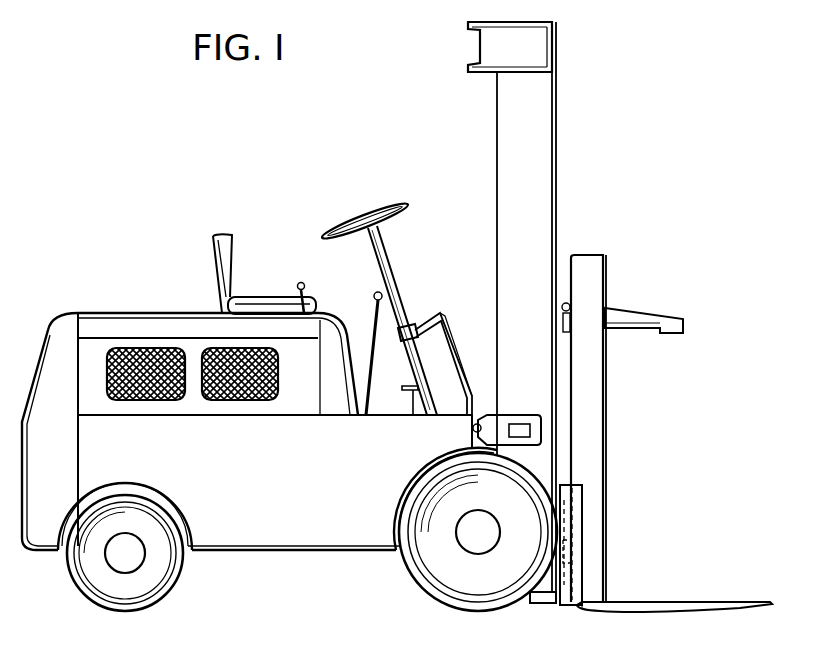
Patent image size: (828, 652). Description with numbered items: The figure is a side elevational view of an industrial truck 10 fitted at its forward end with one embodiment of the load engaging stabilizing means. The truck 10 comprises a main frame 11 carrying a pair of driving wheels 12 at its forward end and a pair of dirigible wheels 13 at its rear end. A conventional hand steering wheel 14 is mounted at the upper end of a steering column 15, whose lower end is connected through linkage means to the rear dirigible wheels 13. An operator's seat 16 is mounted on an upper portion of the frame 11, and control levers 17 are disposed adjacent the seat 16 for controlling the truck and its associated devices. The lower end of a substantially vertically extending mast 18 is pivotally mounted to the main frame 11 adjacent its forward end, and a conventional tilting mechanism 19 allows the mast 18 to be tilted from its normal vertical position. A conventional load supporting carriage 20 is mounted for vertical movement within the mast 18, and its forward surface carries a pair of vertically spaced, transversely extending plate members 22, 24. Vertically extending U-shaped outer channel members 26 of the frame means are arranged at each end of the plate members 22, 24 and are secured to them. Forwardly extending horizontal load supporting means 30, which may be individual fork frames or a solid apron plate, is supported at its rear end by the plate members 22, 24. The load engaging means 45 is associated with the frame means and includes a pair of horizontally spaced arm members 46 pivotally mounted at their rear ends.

The industrial truck 10 is at (174, 251).
The main frame 11 is at (291, 534).
The driving wheels 12 is at (432, 594).
The dirigible wheels 13 is at (167, 594).
The hand steering wheel 14 is at (373, 216).
The steering column 15 is at (388, 261).
The operator's seat 16 is at (258, 298).
The control levers 17 is at (375, 294).
The mast 18 is at (543, 157).
The tilting mechanism 19 is at (479, 410).
The load supporting carriage 20 is at (545, 604).
The upper transverse plate member 22 is at (573, 525).
The lower transverse plate member 24 is at (565, 580).
The outer channel member 26 is at (593, 395).
The load supporting means 30 is at (660, 605).
The load engaging means 45 is at (634, 292).
The arm member 46 is at (650, 318).